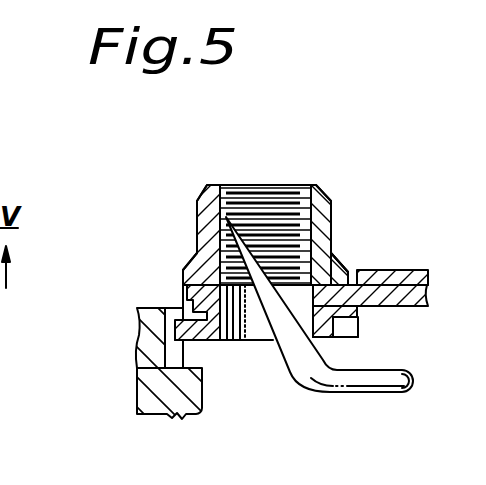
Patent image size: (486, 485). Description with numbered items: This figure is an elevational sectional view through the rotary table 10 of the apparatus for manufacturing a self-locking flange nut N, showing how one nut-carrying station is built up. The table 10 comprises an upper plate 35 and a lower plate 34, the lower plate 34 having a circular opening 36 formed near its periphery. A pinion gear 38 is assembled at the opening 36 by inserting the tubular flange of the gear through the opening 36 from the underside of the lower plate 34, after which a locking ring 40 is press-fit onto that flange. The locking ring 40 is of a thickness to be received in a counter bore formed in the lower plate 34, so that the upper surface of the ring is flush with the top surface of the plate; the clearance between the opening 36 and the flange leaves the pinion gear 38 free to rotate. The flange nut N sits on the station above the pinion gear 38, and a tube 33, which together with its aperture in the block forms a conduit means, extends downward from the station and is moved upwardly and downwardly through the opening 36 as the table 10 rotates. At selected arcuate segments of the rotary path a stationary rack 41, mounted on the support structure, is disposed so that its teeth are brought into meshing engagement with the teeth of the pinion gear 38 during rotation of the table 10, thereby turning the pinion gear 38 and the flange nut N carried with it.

The flange nut N is at (332, 218).
The locking ring 40 is at (344, 267).
The upper plate 35 is at (398, 268).
The table 10 is at (438, 281).
The lower plate 34 is at (407, 306).
The pinion gear 38 is at (366, 339).
The circular opening 36 is at (305, 320).
The tube 33 is at (360, 397).
The rack 41 is at (126, 310).